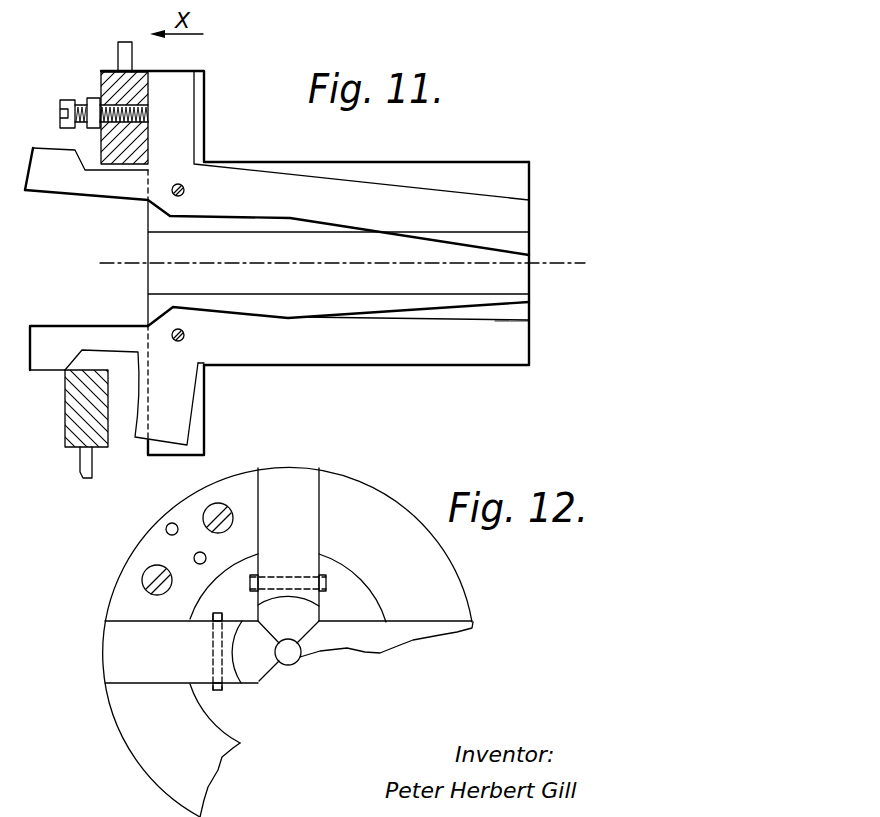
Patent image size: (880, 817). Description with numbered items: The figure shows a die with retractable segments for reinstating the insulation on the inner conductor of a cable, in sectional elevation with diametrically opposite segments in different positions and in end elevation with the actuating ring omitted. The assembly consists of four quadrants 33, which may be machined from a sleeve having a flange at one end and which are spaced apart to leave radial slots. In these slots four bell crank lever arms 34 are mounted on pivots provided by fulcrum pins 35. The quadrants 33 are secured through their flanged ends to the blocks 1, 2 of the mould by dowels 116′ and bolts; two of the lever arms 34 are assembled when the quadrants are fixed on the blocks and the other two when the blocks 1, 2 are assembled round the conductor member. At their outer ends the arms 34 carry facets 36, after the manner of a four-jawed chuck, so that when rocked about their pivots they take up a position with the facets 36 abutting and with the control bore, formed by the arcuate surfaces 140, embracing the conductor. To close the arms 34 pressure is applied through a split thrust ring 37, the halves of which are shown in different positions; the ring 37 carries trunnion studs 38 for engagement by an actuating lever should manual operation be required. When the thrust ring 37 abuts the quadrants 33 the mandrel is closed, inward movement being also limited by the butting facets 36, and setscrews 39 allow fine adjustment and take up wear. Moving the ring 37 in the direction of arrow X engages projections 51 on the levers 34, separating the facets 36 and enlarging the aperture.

In FIG. 11, the block 1 is at (204, 97).
In FIG. 11, the block 2 is at (204, 398).
In FIG. 11, the quadrant 33 is at (260, 165).
In FIG. 12, the quadrant 33 is at (237, 487).
In FIG. 11, the bell crank lever arm 34 is at (170, 128).
In FIG. 12, the bell crank lever arm 34 is at (293, 492).
In FIG. 11, the fulcrum pin 35 is at (168, 195).
In FIG. 12, the fulcrum pin 35 is at (320, 577).
In FIG. 11, the facet 36 is at (493, 303).
In FIG. 12, the facet 36 is at (268, 680).
In FIG. 11, the split thrust ring 37 is at (65, 405).
In FIG. 11, the trunnion stud 38 is at (83, 473).
In FIG. 11, the setscrew 39 is at (70, 100).
In FIG. 11, the projection 51 is at (80, 147).
In FIG. 11, the arcuate surface 140 is at (517, 318).
In FIG. 12, the dowel 116′ is at (168, 527).